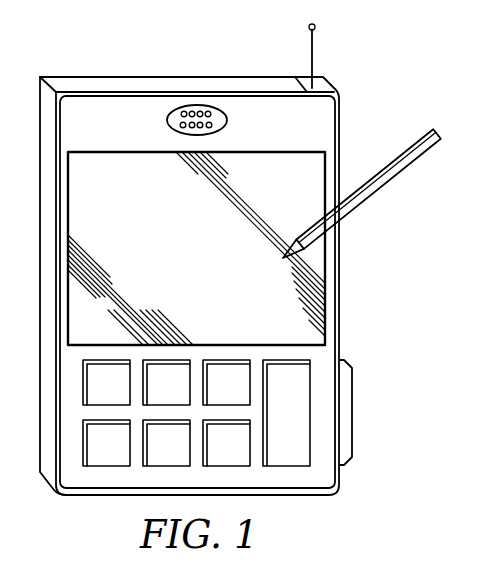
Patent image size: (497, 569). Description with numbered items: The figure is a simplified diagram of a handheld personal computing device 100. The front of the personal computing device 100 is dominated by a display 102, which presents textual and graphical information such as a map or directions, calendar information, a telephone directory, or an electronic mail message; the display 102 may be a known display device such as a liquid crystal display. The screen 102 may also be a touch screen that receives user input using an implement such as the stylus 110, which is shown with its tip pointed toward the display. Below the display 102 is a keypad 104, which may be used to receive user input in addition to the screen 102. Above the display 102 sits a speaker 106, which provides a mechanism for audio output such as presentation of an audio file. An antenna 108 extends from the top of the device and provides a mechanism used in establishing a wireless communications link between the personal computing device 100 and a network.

The personal computing device 100 is at (341, 120).
The display 102 is at (222, 264).
The keypad 104 is at (348, 364).
The speaker 106 is at (228, 120).
The antenna 108 is at (313, 58).
The stylus 110 is at (372, 195).